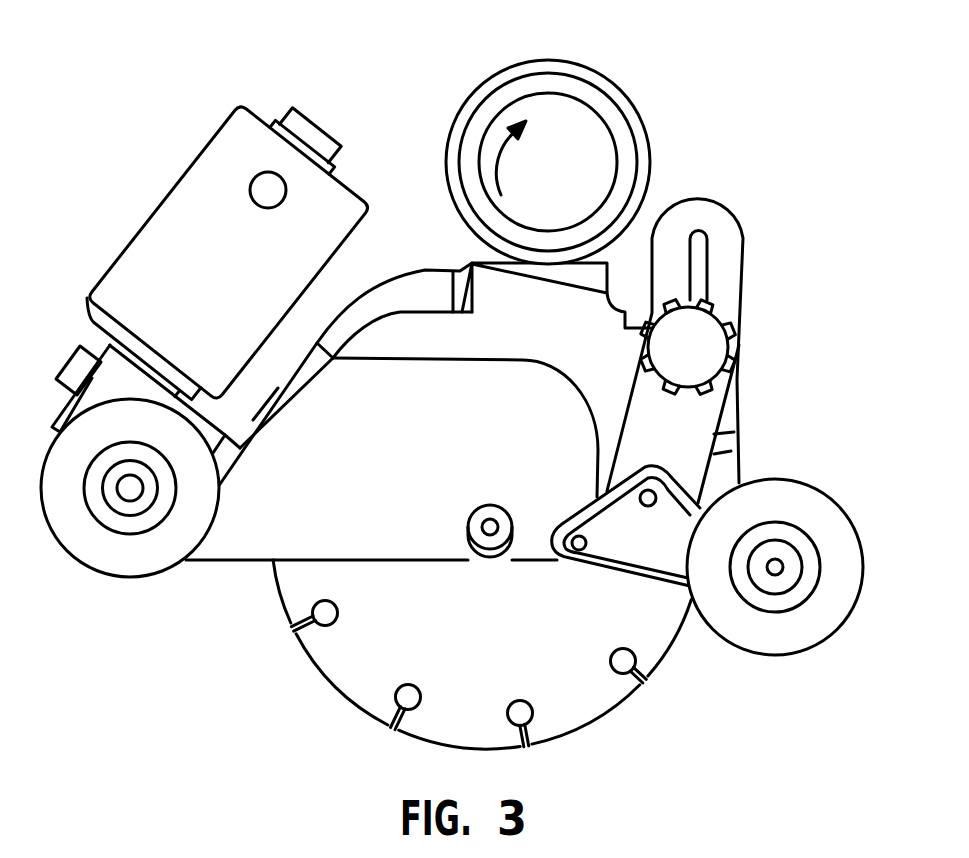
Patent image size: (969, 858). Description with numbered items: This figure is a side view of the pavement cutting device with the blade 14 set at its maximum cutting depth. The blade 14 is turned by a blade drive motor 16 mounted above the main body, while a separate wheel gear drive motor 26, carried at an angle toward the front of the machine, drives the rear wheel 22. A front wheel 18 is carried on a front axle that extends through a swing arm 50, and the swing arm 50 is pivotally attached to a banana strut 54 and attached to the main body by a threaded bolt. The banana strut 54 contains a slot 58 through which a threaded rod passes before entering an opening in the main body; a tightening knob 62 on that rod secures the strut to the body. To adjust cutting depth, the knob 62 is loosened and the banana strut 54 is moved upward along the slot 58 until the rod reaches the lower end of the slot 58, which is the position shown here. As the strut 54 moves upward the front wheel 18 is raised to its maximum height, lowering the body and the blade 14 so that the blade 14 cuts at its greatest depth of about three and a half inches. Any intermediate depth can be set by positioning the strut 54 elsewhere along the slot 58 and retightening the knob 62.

The blade 14 is at (343, 698).
The blade drive means or motor 16 is at (648, 143).
The front wheel 18 is at (722, 638).
The rear wheel 22 is at (154, 577).
The wheel gear drive motor 26 is at (144, 222).
The swing arm 50 is at (650, 588).
The banana strut 54 is at (743, 283).
The slot 58 is at (697, 243).
The knob 62 is at (740, 361).